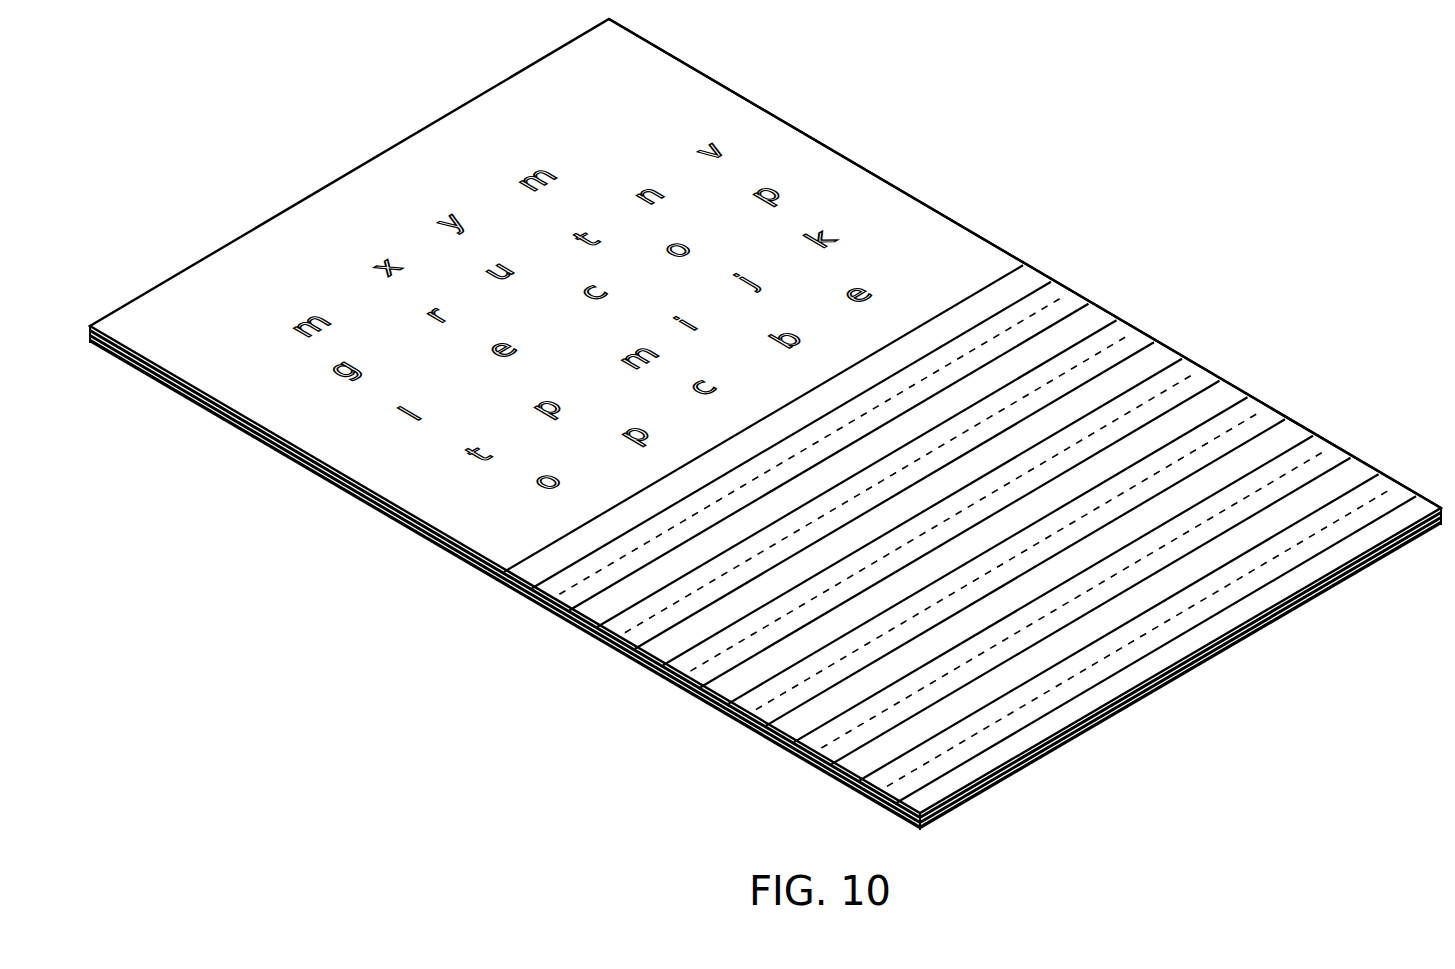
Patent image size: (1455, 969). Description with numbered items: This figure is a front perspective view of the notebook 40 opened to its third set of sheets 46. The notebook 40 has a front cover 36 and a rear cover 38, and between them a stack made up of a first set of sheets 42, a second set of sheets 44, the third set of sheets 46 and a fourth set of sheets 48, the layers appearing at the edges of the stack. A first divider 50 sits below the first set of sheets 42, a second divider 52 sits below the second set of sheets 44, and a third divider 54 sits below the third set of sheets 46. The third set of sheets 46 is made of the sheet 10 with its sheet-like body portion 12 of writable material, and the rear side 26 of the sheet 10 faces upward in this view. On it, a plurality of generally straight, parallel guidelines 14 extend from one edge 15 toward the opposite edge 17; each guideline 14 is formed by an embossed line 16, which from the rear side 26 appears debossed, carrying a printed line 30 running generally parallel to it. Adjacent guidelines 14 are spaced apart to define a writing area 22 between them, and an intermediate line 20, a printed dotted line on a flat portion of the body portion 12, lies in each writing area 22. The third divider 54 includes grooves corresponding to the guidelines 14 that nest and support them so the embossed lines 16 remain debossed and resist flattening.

The sheet 10 is at (1100, 314).
The sheet-like body portion 12 is at (1168, 351).
The guideline 14 is at (556, 579).
The edge 15 is at (582, 620).
The embossed line 16 is at (938, 340).
The opposite edge 17 is at (1302, 430).
The intermediate line 20 is at (998, 328).
The writing area 22 is at (612, 636).
The rear side 26 is at (1233, 388).
The printed line 30 is at (888, 370).
The front cover 36 is at (156, 386).
The rear cover 38 is at (970, 800).
The notebook 40 is at (1168, 186).
The first set of sheets 42 is at (208, 412).
The second set of sheets 44 is at (308, 461).
The third set of sheets 46 is at (738, 680).
The fourth set of sheets 48 is at (848, 776).
The first divider 50 is at (254, 436).
The second divider 52 is at (910, 198).
The third divider 54 is at (788, 736).